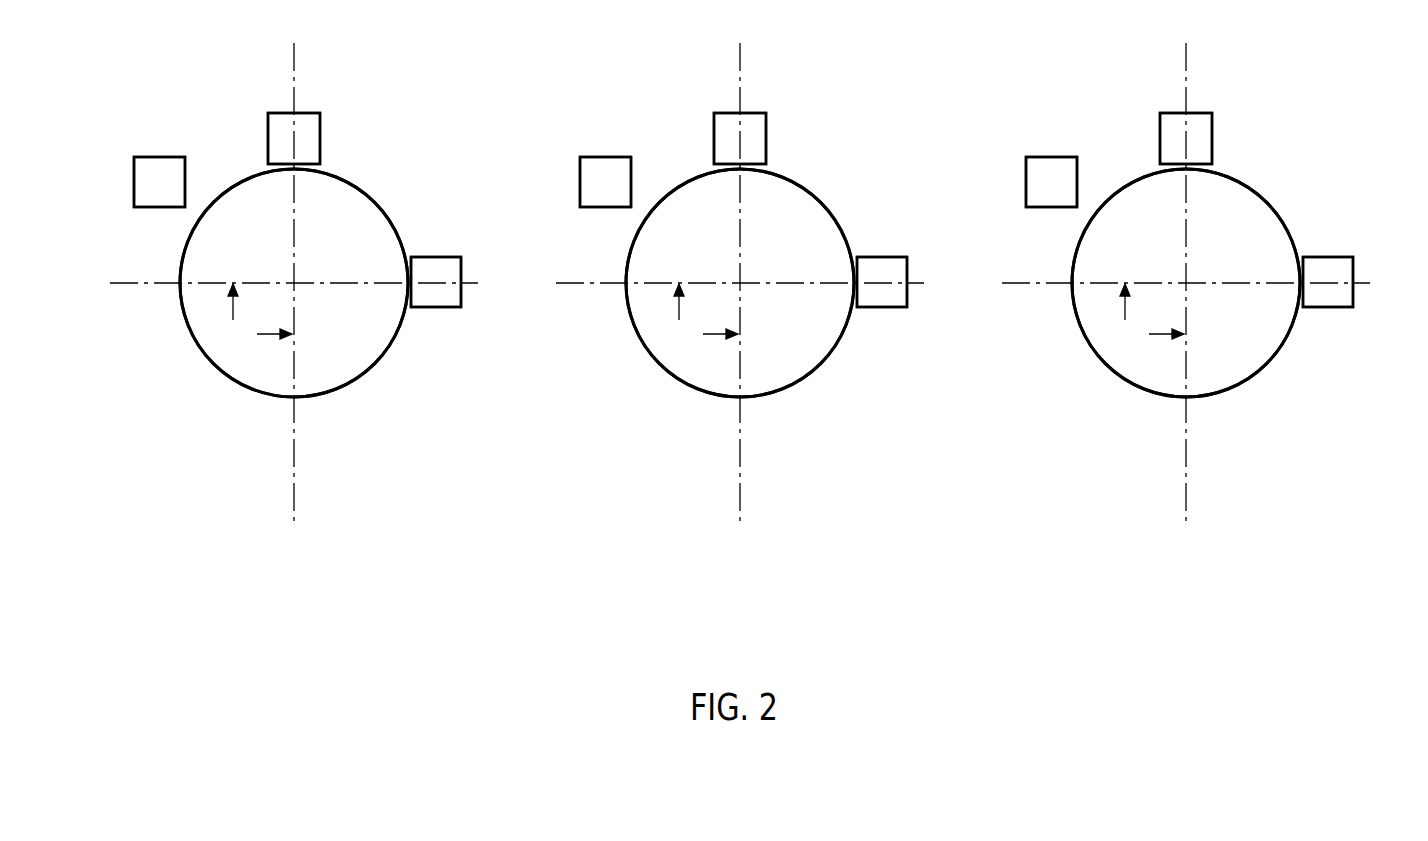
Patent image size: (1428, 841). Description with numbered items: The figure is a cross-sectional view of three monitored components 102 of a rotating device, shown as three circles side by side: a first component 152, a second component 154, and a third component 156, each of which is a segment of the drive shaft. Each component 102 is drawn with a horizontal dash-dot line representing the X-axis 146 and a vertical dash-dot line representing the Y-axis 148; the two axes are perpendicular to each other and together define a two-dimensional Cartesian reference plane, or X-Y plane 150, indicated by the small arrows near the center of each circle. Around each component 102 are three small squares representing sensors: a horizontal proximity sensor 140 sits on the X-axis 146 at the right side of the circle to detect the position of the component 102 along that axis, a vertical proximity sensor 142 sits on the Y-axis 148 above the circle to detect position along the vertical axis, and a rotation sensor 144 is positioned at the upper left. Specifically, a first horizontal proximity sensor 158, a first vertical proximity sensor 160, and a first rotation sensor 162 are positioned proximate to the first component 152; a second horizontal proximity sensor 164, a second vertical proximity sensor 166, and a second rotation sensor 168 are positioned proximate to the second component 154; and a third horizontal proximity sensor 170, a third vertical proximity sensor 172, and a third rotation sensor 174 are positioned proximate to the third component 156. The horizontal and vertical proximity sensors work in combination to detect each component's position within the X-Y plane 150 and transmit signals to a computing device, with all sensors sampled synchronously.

The component 102 is at (222, 370).
The horizontal proximity sensor 140 is at (437, 257).
The vertical proximity sensor 142 is at (281, 112).
The rotation sensor 144 is at (158, 156).
The X-axis 146 is at (153, 282).
The Y-axis 148 is at (295, 465).
The X-Y plane 150 is at (701, 316).
The first component 152 is at (372, 195).
The second component 154 is at (752, 281).
The third component 156 is at (1198, 281).
The first horizontal proximity sensor 158 is at (437, 307).
The first vertical proximity sensor 160 is at (268, 124).
The first rotation sensor 162 is at (133, 182).
The second horizontal proximity sensor 164 is at (904, 300).
The second vertical proximity sensor 166 is at (704, 136).
The second rotation sensor 168 is at (570, 182).
The third horizontal proximity sensor 170 is at (1350, 300).
The third vertical proximity sensor 172 is at (1150, 136).
The third rotation sensor 174 is at (1016, 182).